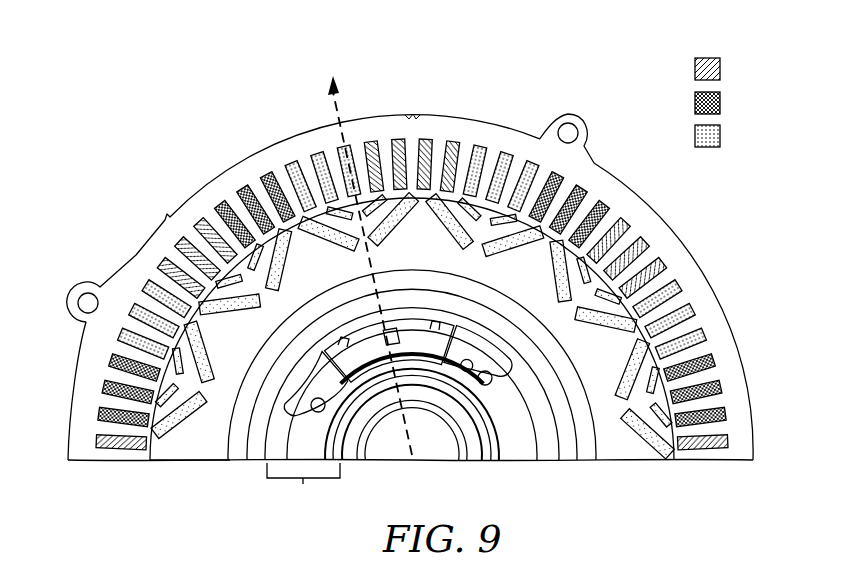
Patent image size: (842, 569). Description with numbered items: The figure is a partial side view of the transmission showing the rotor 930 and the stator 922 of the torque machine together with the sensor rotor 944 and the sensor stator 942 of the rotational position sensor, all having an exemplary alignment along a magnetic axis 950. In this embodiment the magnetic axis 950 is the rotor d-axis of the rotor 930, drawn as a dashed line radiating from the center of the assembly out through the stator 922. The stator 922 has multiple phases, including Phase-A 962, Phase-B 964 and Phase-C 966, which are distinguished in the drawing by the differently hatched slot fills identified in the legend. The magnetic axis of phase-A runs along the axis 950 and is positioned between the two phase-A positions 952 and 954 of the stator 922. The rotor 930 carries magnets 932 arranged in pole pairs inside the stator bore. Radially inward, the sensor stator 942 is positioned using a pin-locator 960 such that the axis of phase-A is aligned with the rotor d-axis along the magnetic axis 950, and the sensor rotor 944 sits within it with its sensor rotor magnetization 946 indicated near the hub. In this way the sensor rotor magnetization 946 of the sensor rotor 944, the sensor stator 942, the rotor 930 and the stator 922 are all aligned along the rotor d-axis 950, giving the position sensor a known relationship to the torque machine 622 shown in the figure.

The electric machine 622 is at (429, 287).
The stator 922 is at (80, 462).
The rotor 930 is at (190, 462).
The permanent magnet 932 is at (660, 432).
The sensor stator 942 is at (283, 402).
The sensor rotor 944 is at (257, 465).
The sensor rotor magnetization 946 is at (318, 509).
The magnetic axis 950 is at (350, 74).
The phase-A position 952 is at (262, 163).
The phase-A position 954 is at (431, 136).
The pin-locator 960 is at (466, 373).
The Phase-A 962 is at (732, 71).
The Phase-B 964 is at (732, 105).
The Phase-C 966 is at (732, 138).